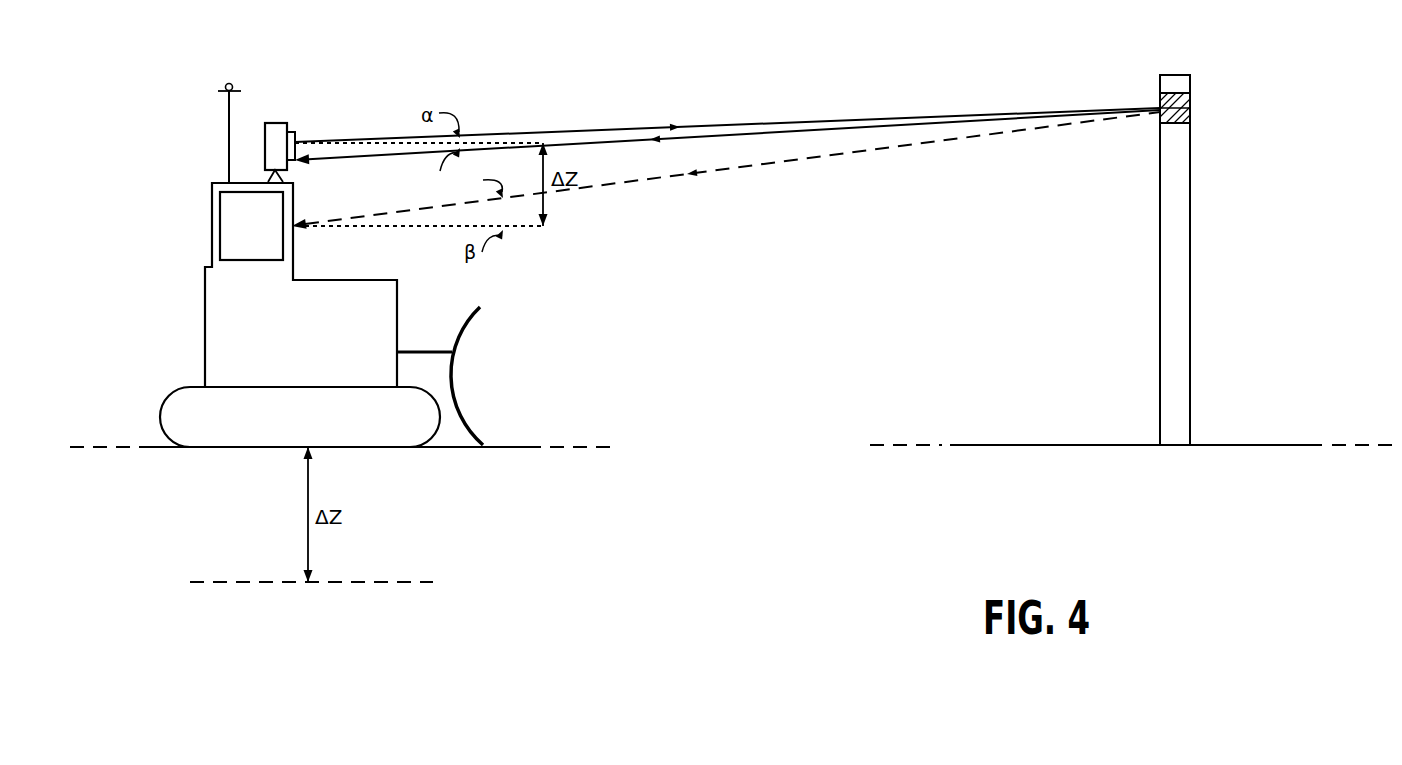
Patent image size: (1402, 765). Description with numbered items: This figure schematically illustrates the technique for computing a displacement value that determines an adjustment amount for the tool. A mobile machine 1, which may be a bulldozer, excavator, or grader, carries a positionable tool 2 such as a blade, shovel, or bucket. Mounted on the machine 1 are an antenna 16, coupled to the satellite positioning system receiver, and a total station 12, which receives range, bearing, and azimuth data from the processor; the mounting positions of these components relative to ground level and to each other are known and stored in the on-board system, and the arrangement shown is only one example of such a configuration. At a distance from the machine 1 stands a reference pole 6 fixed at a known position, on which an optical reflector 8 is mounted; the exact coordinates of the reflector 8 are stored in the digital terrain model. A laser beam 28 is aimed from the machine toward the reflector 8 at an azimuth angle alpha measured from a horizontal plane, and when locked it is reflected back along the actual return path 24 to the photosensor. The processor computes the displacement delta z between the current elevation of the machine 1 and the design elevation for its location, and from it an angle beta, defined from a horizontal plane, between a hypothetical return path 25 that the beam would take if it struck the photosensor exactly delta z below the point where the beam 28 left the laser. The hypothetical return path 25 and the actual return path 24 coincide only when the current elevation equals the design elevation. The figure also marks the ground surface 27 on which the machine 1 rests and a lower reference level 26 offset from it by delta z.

The mobile machine 1 is at (205, 352).
The positionable tool 2 is at (455, 373).
The pole 6 is at (1191, 385).
The optical reflector 8 is at (1190, 95).
The total station 12 is at (276, 122).
The antenna 16 is at (231, 83).
The actual return path 24 is at (777, 135).
The hypothetical return path 25 is at (807, 157).
The reference plane 26 is at (432, 583).
The ground surface 27 is at (524, 449).
The laser beam 28 is at (738, 122).